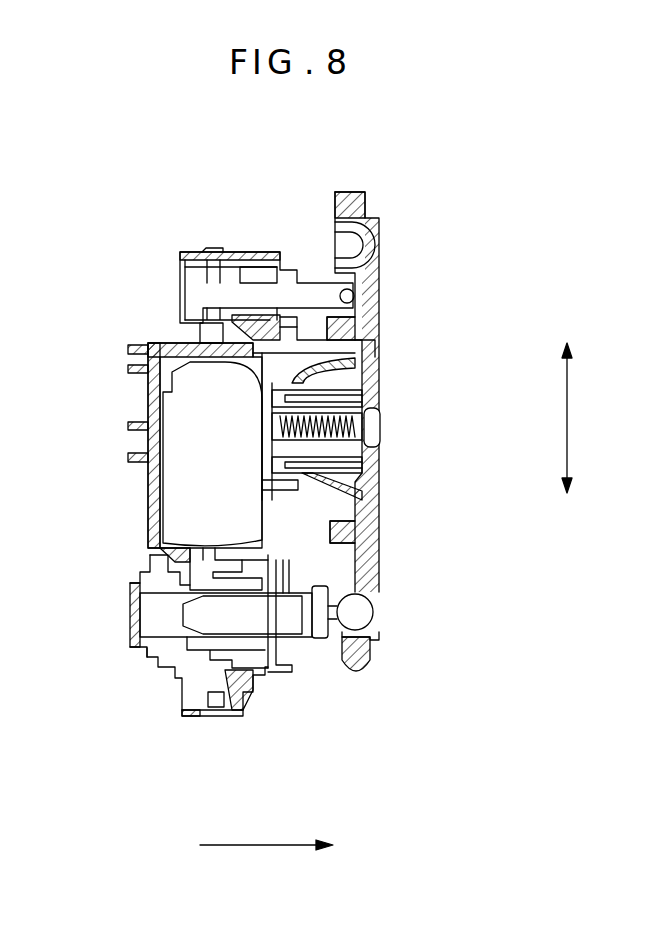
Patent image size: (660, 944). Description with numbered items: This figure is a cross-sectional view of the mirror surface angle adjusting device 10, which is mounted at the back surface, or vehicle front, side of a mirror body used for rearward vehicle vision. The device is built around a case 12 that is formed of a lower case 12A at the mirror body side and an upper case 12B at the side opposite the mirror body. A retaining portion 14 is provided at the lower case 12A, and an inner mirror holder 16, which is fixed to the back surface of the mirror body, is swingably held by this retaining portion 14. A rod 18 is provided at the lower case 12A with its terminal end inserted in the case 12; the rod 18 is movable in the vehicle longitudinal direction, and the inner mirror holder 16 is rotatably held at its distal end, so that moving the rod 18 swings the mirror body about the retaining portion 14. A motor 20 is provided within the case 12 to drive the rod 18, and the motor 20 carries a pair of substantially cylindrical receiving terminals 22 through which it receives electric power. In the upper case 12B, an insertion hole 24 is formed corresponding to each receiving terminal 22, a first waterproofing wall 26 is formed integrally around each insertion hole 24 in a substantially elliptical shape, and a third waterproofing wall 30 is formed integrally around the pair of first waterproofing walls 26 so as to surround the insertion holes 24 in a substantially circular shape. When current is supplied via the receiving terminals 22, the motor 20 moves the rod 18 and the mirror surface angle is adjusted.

The mirror surface angle adjusting device 10 is at (126, 190).
The case 12 is at (222, 732).
The lower case 12A is at (278, 668).
The upper case 12B is at (180, 662).
The retaining portion 14 is at (372, 400).
The inner mirror holder 16 is at (380, 232).
The rod 18 is at (298, 625).
The motor 20 is at (160, 520).
The receiving terminal 22 is at (170, 393).
The insertion hole 24 is at (158, 390).
The first waterproofing wall 26 is at (128, 368).
The third waterproofing wall 30 is at (128, 348).